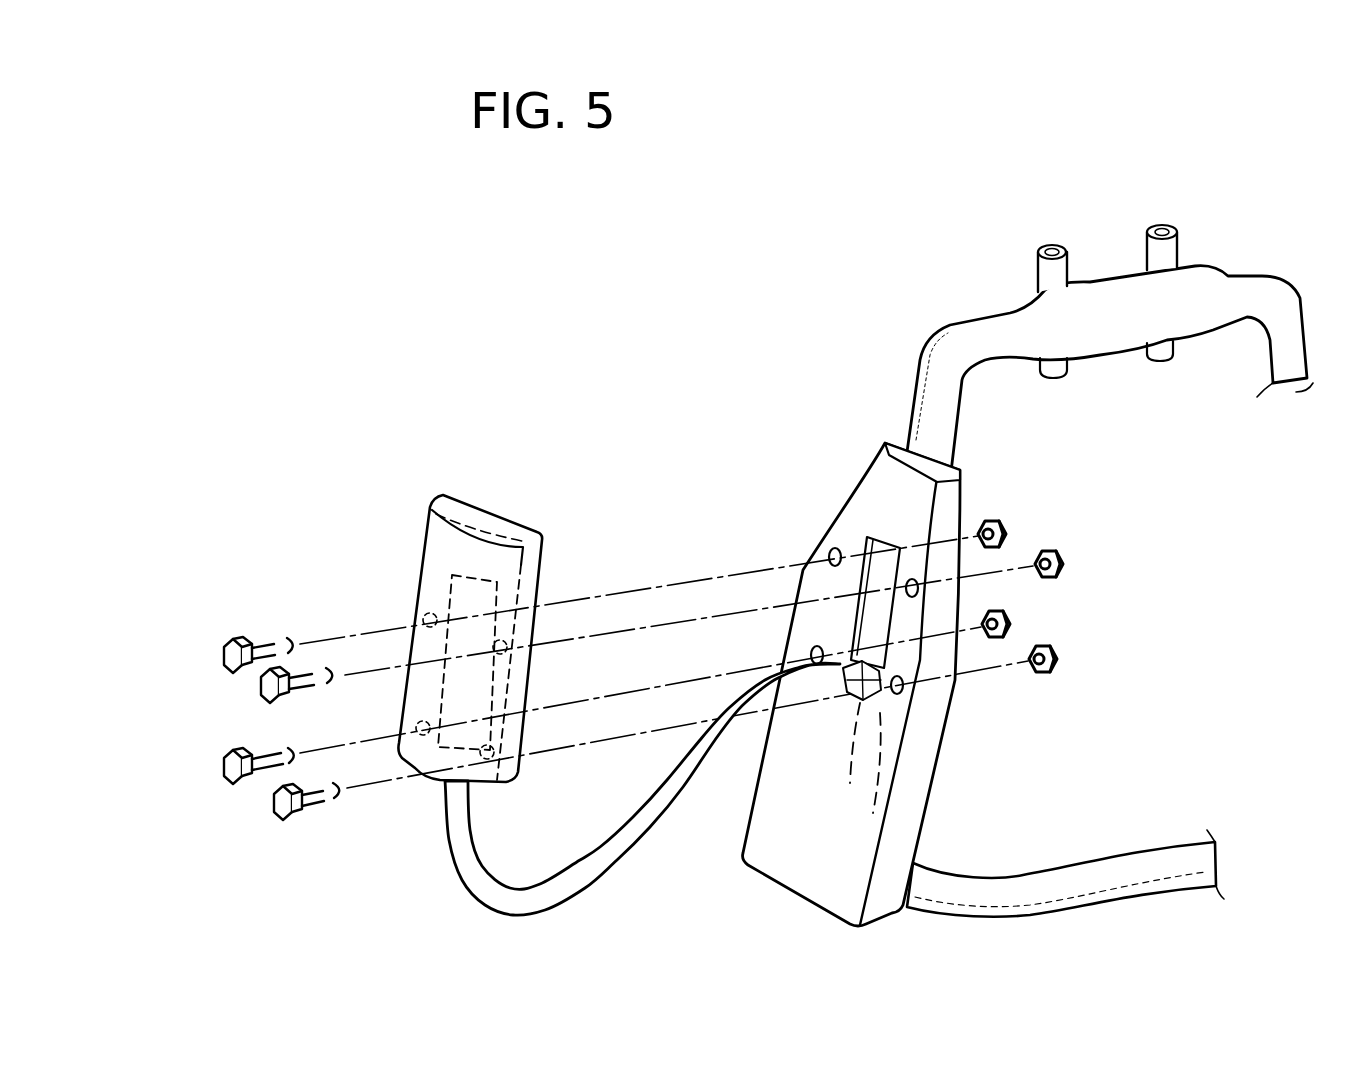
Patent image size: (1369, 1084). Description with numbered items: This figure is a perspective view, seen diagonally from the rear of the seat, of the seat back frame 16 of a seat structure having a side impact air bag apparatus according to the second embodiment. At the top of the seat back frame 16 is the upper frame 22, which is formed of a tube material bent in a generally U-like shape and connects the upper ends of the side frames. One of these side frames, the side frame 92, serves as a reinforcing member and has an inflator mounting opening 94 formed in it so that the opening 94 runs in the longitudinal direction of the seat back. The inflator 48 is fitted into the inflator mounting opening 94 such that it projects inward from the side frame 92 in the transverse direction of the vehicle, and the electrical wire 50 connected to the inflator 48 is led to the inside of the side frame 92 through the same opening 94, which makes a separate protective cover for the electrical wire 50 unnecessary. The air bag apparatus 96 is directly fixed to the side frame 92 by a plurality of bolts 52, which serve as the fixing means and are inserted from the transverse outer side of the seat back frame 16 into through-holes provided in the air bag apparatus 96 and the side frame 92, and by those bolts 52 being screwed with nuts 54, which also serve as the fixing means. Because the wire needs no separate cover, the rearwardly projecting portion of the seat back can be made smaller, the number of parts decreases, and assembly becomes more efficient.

The seat back frame 16 is at (1046, 311).
The upper frame 22 is at (1100, 285).
The inflator 48 is at (460, 567).
The electrical wire 50 is at (490, 877).
The bolts 52 is at (266, 656).
The nuts 54 is at (1063, 560).
The side frame 92 is at (774, 691).
The inflator mounting opening 94 is at (850, 617).
The air bag apparatus 96 is at (421, 568).